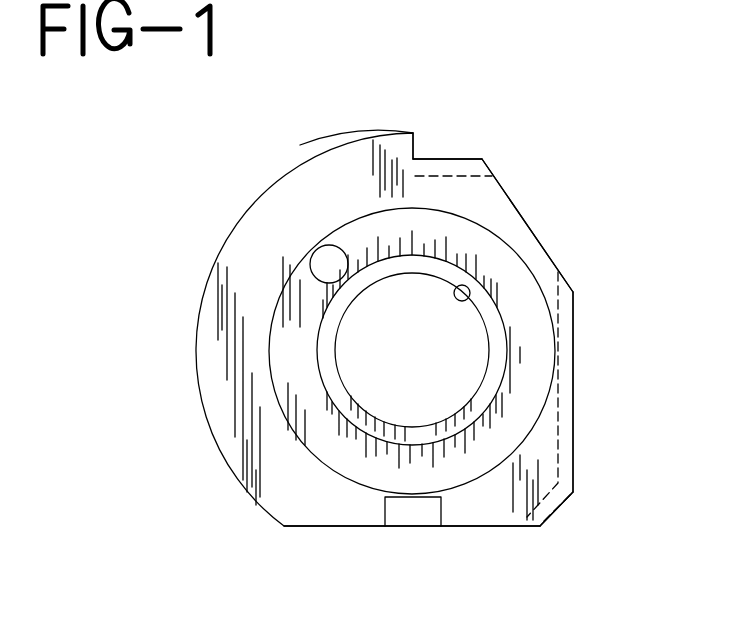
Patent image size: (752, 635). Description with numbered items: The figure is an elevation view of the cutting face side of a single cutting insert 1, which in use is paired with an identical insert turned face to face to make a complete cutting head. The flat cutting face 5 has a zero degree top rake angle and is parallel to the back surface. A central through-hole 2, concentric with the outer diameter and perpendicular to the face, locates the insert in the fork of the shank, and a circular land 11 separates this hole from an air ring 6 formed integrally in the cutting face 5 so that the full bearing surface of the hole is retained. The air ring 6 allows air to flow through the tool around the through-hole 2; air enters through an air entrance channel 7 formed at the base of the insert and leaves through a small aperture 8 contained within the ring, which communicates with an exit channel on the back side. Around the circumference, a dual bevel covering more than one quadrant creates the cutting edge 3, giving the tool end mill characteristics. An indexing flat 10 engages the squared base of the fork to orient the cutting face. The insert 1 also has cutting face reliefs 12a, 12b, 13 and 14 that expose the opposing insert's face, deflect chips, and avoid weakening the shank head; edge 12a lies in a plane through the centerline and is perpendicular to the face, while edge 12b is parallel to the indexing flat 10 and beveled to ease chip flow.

The cutting insert 1 is at (585, 545).
The central through-hole 2 is at (473, 300).
The cutting edge 3 is at (200, 390).
The cutting face 5 is at (330, 170).
The air ring 6 is at (525, 382).
The air entrance channel 7 is at (425, 518).
The aperture 8 is at (318, 275).
The indexing flat 10 is at (338, 527).
The circular land 11 is at (493, 318).
The center relief edge 12a is at (415, 153).
The center relief edge 12b is at (453, 160).
The cutting face relief 13 is at (506, 193).
The cutting face relief 14 is at (573, 463).